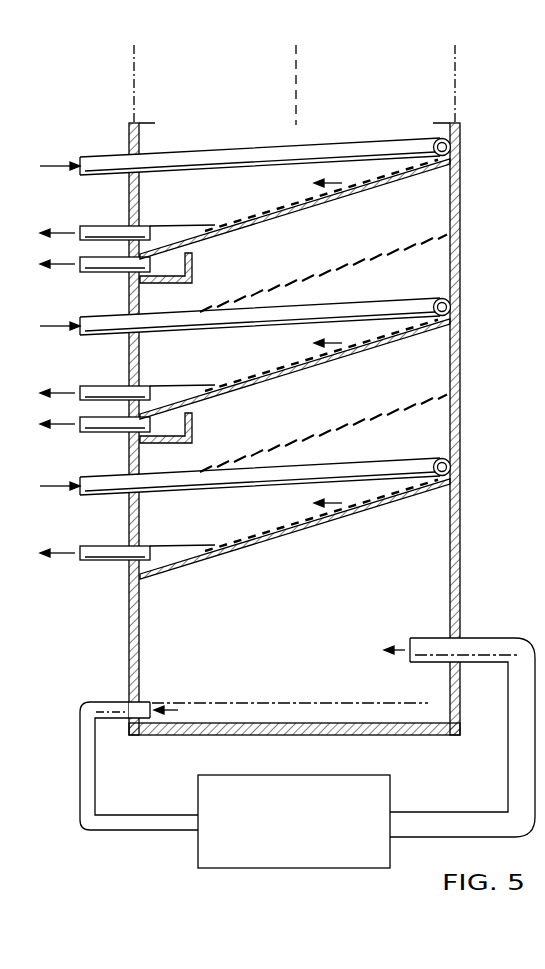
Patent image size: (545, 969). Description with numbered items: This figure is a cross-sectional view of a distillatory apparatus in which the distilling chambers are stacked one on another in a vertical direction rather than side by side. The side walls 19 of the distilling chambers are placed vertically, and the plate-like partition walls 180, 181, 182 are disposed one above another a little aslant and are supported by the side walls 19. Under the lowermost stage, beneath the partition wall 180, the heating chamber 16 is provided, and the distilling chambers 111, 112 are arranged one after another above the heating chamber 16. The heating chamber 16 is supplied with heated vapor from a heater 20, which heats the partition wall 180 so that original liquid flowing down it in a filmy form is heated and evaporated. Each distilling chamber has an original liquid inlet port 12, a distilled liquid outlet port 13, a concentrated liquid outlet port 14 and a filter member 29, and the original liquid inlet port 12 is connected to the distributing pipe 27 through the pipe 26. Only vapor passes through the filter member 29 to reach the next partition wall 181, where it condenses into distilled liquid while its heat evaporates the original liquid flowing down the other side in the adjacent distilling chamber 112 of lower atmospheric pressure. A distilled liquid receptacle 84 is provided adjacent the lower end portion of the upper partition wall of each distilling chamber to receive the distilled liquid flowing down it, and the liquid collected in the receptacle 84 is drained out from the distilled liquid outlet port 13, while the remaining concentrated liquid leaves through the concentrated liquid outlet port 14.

The original liquid inlet port 12 is at (95, 158).
The distilled liquid outlet port 13 is at (118, 268).
The concentrated liquid outlet port 14 is at (116, 228).
The heating chamber 16 is at (420, 582).
The side walls 19 is at (130, 135).
The heater 20 is at (300, 833).
The pipe 26 is at (240, 156).
The distributing pipe 27 is at (440, 139).
The filter member 29 is at (305, 276).
The distilled liquid receptacle 84 is at (192, 272).
The distilling chamber 111 is at (426, 368).
The distilling chamber 112 is at (430, 210).
The partition wall 180 is at (338, 516).
The partition wall 181 is at (338, 356).
The partition wall 182 is at (338, 196).